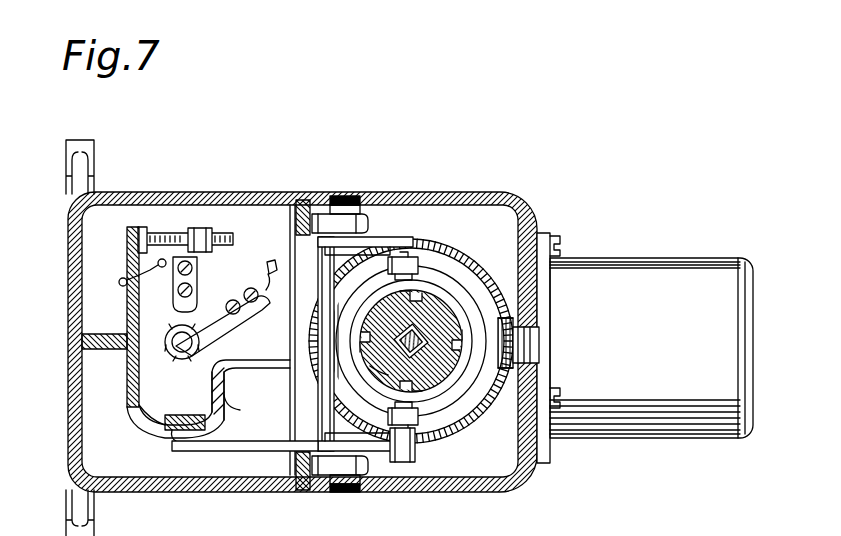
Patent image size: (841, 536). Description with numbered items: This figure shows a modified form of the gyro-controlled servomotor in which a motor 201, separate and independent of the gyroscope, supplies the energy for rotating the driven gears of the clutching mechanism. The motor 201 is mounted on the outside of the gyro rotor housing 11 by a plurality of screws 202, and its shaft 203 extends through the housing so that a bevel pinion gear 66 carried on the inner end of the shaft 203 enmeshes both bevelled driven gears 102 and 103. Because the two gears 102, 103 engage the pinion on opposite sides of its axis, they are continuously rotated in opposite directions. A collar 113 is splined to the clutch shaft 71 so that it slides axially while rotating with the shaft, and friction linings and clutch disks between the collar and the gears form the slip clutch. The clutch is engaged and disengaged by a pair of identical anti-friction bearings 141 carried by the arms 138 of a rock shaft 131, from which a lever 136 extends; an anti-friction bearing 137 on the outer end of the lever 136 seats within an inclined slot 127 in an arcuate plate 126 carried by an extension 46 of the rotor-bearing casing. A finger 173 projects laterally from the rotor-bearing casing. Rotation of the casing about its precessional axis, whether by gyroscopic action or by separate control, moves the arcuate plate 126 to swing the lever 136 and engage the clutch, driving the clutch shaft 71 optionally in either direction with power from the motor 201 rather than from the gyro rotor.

The gyro rotor housing 11 is at (450, 194).
The extension of the rotor-bearing casing 46 is at (130, 303).
The bevel pinion gear 66 is at (512, 342).
The clutch shaft 71 is at (420, 336).
The bevelled driven gear 102 is at (468, 258).
The bevelled driven gear 103 is at (407, 341).
The collar 113 is at (377, 373).
The arcuate plate 126 is at (140, 423).
The inclined slot 127 is at (228, 402).
The rock shaft 131 is at (322, 262).
The lever 136 is at (253, 445).
The anti-friction bearing 137 is at (173, 428).
The arms 138 is at (368, 238).
The anti-friction bearings 141 is at (422, 256).
The finger 173 is at (263, 350).
The motor 201 is at (690, 268).
The screws 202 is at (562, 240).
The motor shaft 203 is at (528, 355).